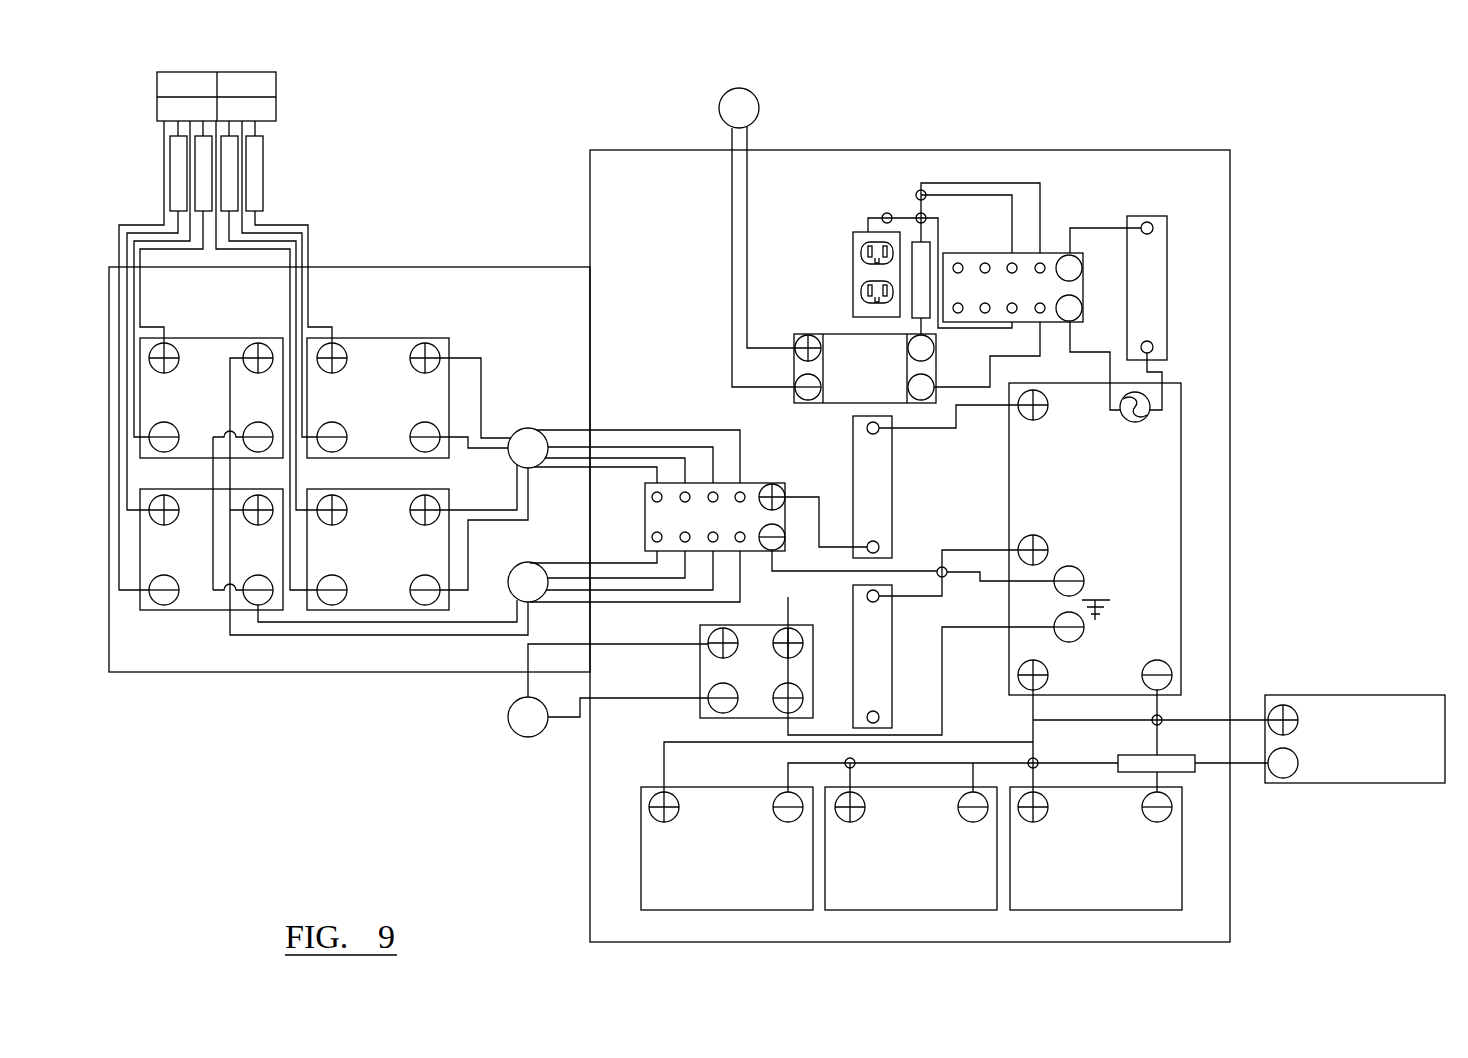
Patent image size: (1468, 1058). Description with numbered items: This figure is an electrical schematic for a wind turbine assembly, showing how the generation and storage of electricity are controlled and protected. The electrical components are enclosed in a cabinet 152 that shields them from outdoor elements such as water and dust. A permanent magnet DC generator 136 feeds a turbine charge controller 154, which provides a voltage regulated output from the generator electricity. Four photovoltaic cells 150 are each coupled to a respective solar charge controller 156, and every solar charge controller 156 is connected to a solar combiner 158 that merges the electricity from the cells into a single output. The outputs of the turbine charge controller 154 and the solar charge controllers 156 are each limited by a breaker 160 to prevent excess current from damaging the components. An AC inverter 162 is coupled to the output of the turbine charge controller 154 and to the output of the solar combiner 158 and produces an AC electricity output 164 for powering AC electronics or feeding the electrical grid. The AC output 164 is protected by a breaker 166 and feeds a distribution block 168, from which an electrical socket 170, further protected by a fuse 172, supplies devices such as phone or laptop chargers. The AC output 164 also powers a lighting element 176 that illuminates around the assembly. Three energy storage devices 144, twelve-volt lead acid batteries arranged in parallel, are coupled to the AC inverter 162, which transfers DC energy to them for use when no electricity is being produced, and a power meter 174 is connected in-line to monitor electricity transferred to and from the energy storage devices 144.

The generator 136 is at (520, 737).
The energy storage device 144 is at (746, 872).
The photovoltaic cell 150 is at (253, 83).
The cabinet 152 is at (392, 265).
The turbine charge controller 154 is at (700, 667).
The solar charge controller 156 is at (212, 337).
The solar combiner 158 is at (645, 523).
The breaker 160 is at (893, 478).
The AC inverter 162 is at (1118, 505).
The AC electricity output 164 is at (1150, 415).
The breaker 166 is at (1167, 286).
The distribution block 168 is at (1000, 252).
The electrical socket 170 is at (858, 230).
The fuse 172 is at (913, 240).
The power meter 174 is at (1379, 755).
The lighting element 176 is at (718, 102).